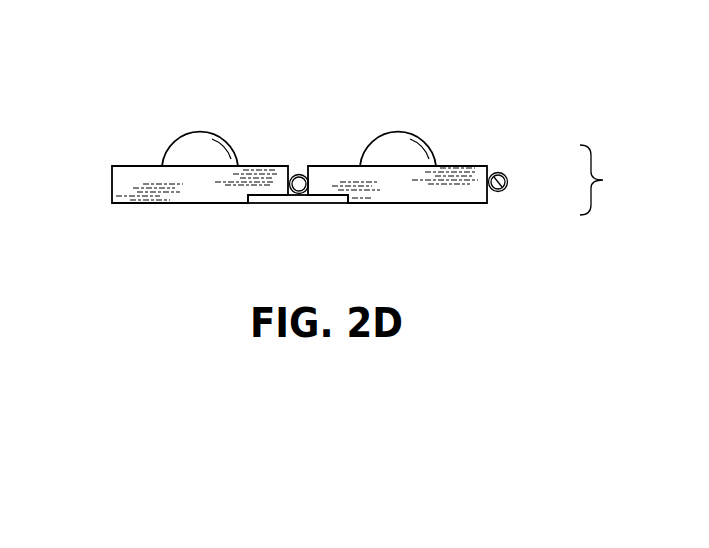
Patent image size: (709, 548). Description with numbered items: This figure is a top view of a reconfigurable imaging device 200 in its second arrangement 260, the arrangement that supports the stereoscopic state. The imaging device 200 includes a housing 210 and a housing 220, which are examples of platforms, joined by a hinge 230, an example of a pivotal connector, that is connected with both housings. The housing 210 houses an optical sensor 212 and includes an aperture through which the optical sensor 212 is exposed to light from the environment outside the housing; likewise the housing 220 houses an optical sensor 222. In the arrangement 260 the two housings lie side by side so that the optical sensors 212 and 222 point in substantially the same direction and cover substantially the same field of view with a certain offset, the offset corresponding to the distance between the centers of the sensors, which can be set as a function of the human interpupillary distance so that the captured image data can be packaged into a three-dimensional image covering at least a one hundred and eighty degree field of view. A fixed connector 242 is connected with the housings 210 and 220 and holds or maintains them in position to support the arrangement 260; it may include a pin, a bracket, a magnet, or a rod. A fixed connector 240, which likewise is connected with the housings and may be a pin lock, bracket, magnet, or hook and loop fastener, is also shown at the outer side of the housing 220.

The imaging device 200 is at (480, 108).
The housing 210 is at (198, 190).
The optical sensor 212 is at (194, 138).
The housing 220 is at (400, 190).
The optical sensor 222 is at (403, 138).
The hinge 230 is at (300, 195).
The fixed connector 240 is at (503, 191).
The fixed connector 242 is at (338, 200).
The second arrangement 260 is at (322, 191).